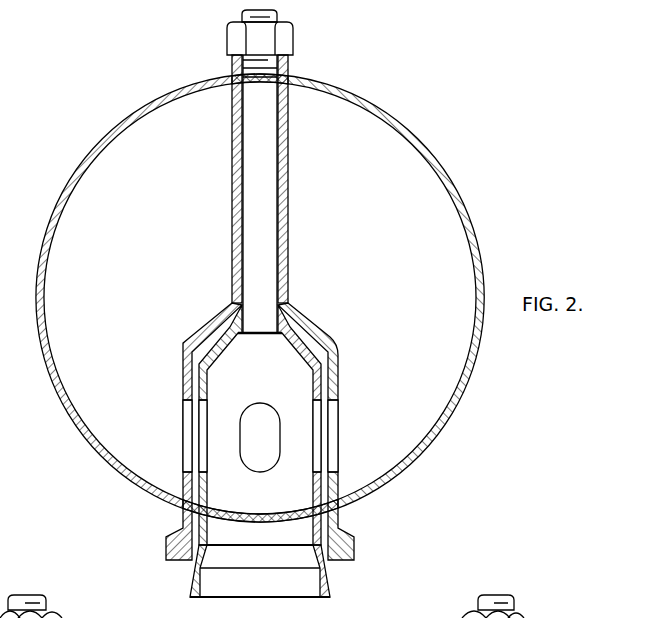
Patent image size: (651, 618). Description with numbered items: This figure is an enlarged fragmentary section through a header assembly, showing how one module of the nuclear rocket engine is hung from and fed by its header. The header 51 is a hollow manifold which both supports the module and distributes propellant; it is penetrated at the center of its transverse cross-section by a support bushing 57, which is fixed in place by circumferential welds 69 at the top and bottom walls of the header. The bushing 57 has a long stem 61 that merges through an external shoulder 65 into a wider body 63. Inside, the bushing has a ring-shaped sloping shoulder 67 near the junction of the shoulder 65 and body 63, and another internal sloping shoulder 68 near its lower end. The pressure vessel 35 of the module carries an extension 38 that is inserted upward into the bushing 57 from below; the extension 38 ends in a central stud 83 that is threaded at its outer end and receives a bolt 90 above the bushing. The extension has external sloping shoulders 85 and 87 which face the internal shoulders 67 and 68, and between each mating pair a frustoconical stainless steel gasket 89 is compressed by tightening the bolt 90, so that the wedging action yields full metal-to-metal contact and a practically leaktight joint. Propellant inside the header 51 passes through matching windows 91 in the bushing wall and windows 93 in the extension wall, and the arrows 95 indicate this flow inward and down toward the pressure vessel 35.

The pressure vessel 35 is at (401, 584).
The extension 38 is at (333, 591).
The header 51 is at (375, 108).
The support bushing 57 is at (325, 126).
The stem 61 is at (289, 192).
The body 63 is at (338, 374).
The shoulder 65 is at (298, 314).
The internal ring-shaped sloping shoulder 67 is at (323, 350).
The internal sloping shoulder 68 is at (183, 560).
The circumferential weld 69 is at (288, 75).
The central stud 83 is at (267, 228).
The external sloping shoulder 85 is at (325, 358).
The external sloping shoulder 87 is at (340, 561).
The CONOSEAL gasket 89 is at (338, 340).
The bolt 90 is at (228, 36).
The window 91 is at (188, 410).
The window 93 is at (208, 460).
The arrows 95 is at (218, 446).